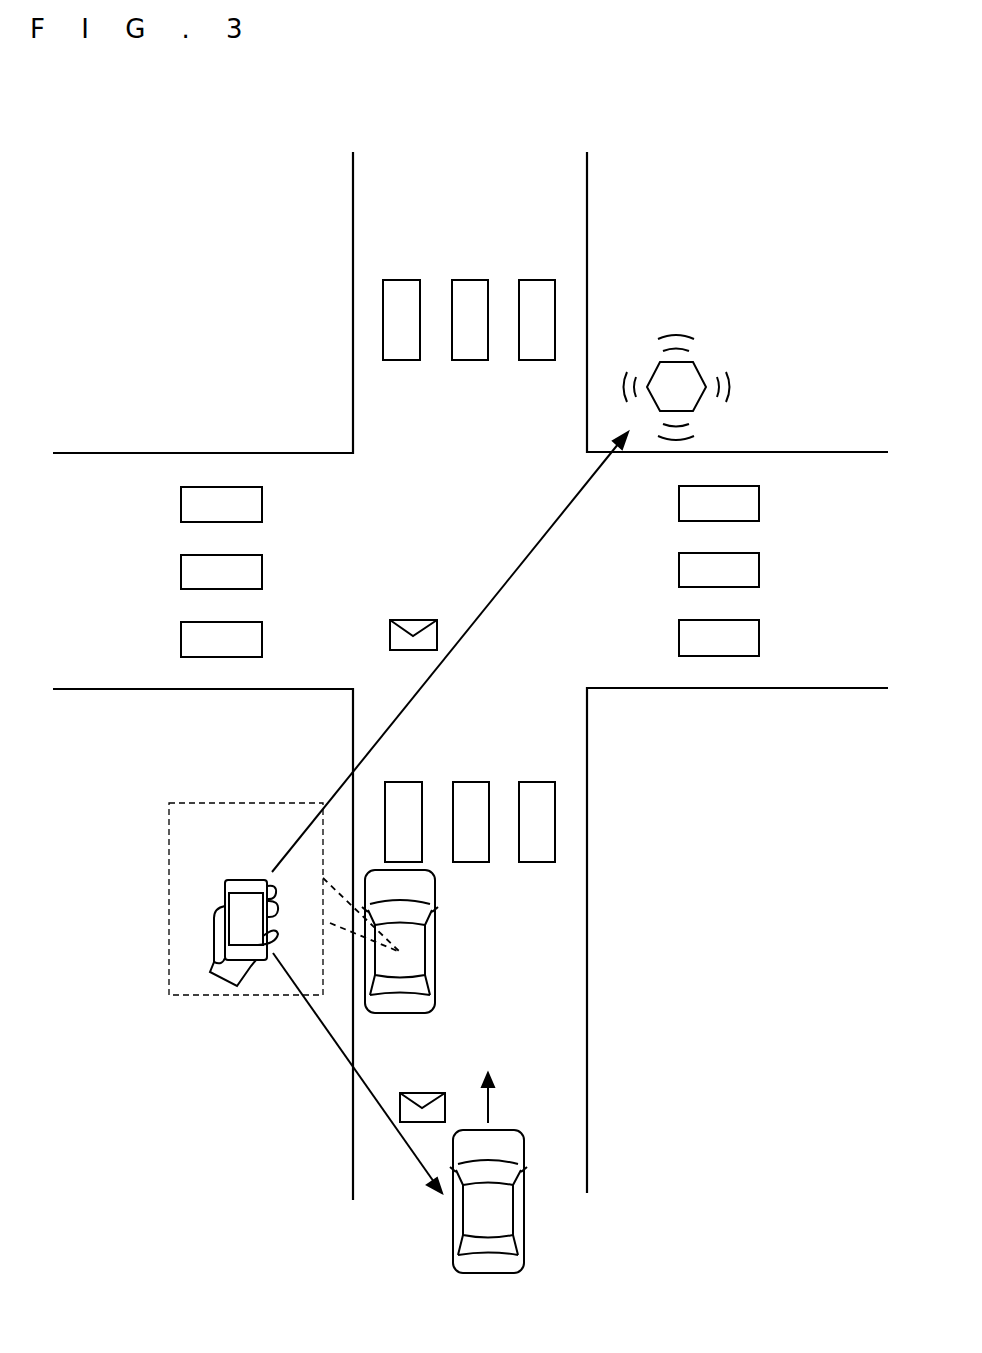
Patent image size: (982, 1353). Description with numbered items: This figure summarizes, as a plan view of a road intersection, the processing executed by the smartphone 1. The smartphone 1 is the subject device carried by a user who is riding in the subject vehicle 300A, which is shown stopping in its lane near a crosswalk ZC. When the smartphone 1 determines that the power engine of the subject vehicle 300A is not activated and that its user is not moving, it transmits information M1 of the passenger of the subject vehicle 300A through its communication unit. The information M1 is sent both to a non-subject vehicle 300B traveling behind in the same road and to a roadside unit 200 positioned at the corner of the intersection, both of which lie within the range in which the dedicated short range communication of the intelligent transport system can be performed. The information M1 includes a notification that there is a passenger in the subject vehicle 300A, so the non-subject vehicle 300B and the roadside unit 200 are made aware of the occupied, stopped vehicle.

The smartphone 1 is at (242, 880).
The roadside unit 200 is at (697, 372).
The subject vehicle 300A is at (435, 945).
The non-subject vehicle 300B is at (524, 1228).
The information of the passenger M1 is at (410, 617).
The crosswalk ZC is at (540, 814).